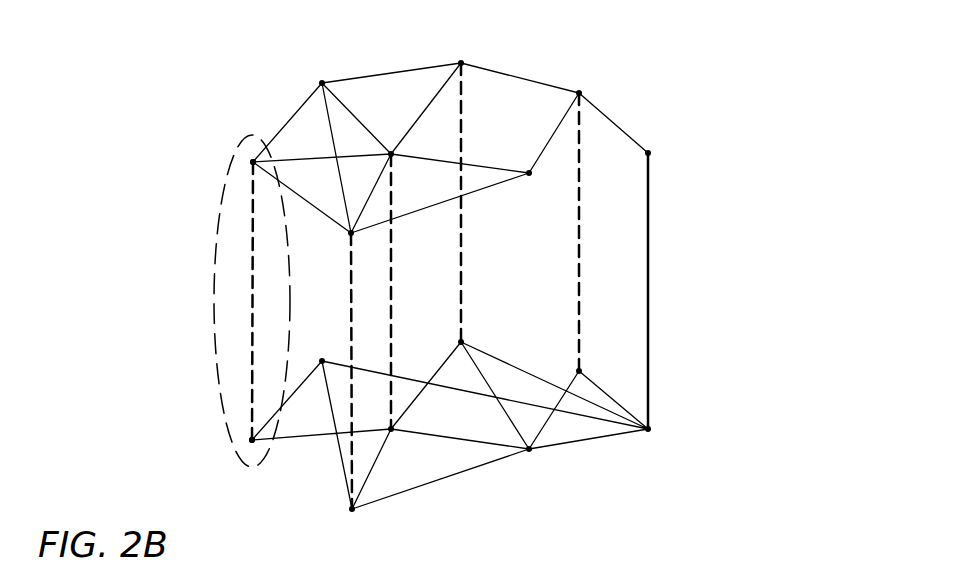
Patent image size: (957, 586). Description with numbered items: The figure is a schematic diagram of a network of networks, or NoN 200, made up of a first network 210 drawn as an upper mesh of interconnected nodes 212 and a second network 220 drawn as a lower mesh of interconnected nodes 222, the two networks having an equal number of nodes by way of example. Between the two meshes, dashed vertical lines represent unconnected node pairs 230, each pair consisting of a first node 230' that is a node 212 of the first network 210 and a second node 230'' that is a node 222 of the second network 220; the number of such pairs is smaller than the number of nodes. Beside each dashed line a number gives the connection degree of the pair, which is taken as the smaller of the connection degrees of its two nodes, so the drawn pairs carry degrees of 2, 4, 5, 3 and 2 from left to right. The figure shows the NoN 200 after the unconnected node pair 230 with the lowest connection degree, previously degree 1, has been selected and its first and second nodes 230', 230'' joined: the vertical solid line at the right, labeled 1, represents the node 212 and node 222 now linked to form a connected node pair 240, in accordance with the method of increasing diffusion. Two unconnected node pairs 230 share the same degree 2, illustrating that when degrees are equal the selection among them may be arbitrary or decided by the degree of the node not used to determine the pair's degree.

The network of networks (NoN) 200 is at (688, 53).
The first network 210 is at (253, 93).
The nodes of the first network 212 is at (322, 83).
The second network 220 is at (618, 479).
The nodes of the second network 222 is at (648, 429).
The unconnected node pair 230 is at (207, 301).
The first node of the unconnected node pair 230' is at (184, 141).
The second node of the unconnected node pair 230'' is at (181, 461).
The connected node pair 240 is at (707, 272).
The connection degree of one 1 is at (662, 292).
The connection degree of two 2 is at (426, 266).
The connection degree of three 3 is at (470, 202).
The connection degree of four 4 is at (360, 371).
The connection degree of five 5 is at (401, 291).